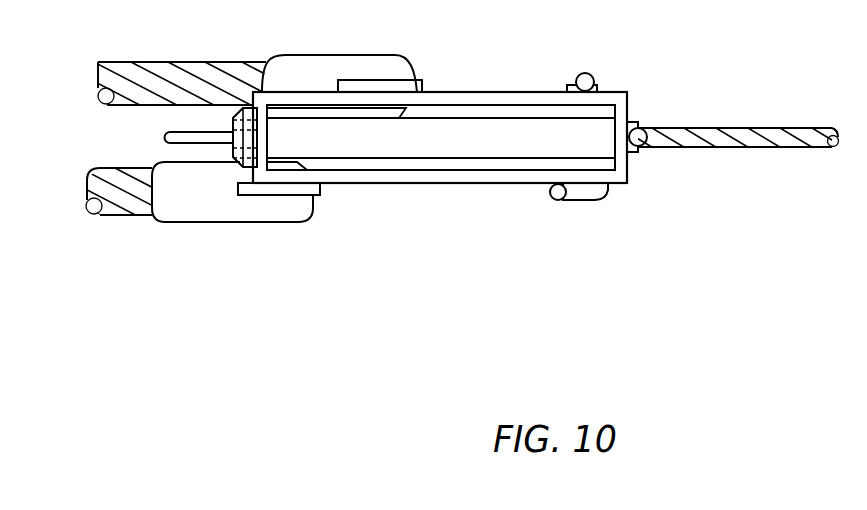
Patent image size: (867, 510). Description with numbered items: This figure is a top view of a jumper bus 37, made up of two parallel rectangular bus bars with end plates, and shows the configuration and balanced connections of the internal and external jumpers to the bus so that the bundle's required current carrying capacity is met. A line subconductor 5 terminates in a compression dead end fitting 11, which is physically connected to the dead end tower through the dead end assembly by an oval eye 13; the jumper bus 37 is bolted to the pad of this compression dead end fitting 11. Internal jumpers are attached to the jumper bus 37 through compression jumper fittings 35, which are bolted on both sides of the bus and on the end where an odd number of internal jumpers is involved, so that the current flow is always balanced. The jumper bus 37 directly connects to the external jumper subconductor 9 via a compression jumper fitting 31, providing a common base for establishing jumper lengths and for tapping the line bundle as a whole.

The line subconductor 5 is at (760, 140).
The external jumper subconductor 9 is at (192, 68).
The compression dead end fitting 11 is at (410, 145).
The oval eye 13 is at (180, 133).
The compression jumper fitting 31 is at (328, 68).
The compression jumper fitting 35 is at (582, 75).
The jumper bus 37 is at (475, 100).